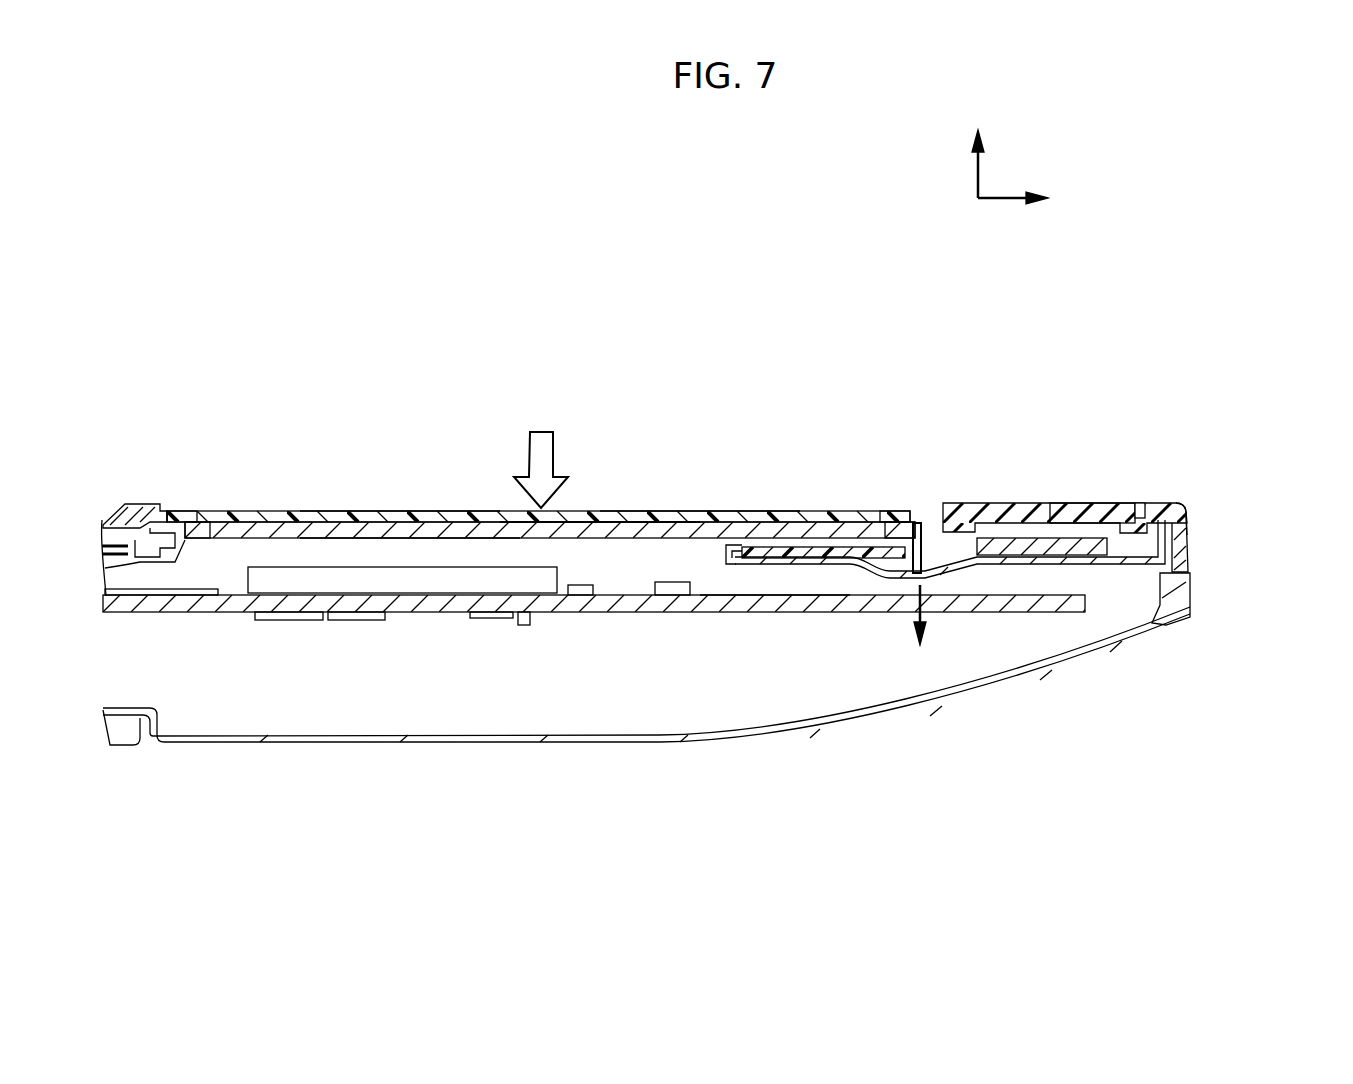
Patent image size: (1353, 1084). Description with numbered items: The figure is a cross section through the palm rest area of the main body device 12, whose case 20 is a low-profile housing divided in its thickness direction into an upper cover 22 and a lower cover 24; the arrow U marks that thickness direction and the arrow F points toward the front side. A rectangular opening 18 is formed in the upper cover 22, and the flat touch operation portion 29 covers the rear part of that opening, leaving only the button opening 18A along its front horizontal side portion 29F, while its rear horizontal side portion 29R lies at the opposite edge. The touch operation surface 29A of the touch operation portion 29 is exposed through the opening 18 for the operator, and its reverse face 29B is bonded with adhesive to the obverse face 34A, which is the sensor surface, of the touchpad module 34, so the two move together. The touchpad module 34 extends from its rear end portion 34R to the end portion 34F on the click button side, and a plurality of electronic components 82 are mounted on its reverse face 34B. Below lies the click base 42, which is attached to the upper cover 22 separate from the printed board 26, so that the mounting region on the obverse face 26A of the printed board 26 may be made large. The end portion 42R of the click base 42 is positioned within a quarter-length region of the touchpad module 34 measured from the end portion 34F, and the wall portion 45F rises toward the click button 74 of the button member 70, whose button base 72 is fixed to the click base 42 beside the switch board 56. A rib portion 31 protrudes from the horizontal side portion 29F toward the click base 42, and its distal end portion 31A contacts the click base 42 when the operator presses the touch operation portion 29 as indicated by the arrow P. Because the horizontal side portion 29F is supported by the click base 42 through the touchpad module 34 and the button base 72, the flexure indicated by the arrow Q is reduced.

The main body device 12 is at (1210, 423).
The opening 18 is at (163, 509).
The button opening 18A is at (1137, 512).
The case 20 is at (1268, 540).
The upper cover 22 is at (1190, 545).
The lower cover 24 is at (1192, 600).
The printed board 26 is at (835, 612).
The obverse face of printed board 26A is at (775, 582).
The touch operation portion 29 is at (677, 510).
The touch operation surface 29A is at (710, 510).
The reverse face of touch operation portion 29B is at (617, 537).
The rear horizontal side portion 29R is at (180, 513).
The front horizontal side portion 29F is at (897, 512).
The rib portion 31 is at (927, 548).
The distal end portion of rib portion 31A is at (922, 578).
The touchpad module 34 is at (445, 540).
The obverse face of touchpad module 34A is at (401, 512).
The reverse face of touchpad module 34B is at (415, 540).
The rear end portion of touchpad module 34R is at (195, 540).
The end portion of touchpad module on click button side 34F is at (878, 516).
The click base 42 is at (1040, 565).
The end portion of click base 42R is at (730, 566).
The wall portion 45F is at (1190, 520).
The switch board 56 is at (1035, 550).
The button member 70 is at (982, 507).
The button base 72 is at (800, 556).
The click button 74 is at (1080, 505).
The electronic component 82 is at (500, 580).
The arrow P is at (528, 446).
The arrow Q is at (908, 640).
The arrow U is at (980, 160).
The arrow F is at (1000, 200).